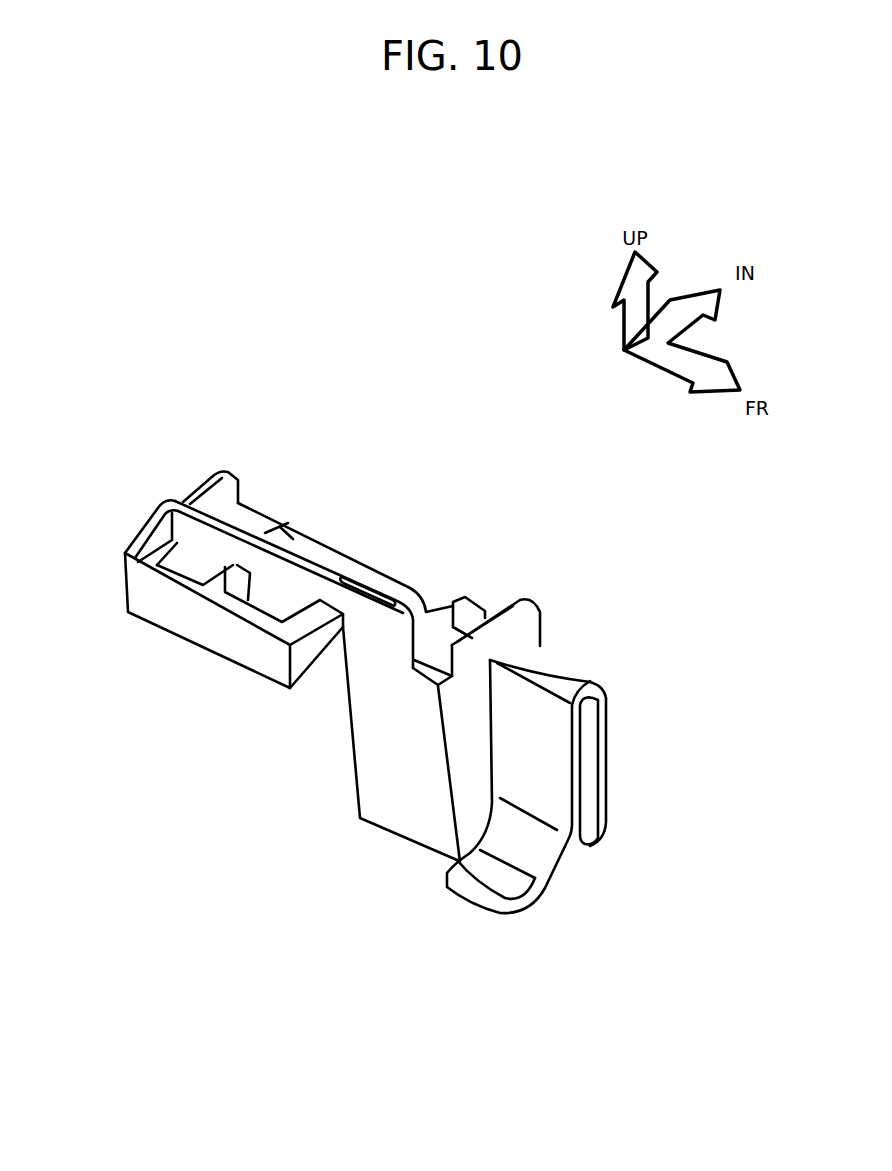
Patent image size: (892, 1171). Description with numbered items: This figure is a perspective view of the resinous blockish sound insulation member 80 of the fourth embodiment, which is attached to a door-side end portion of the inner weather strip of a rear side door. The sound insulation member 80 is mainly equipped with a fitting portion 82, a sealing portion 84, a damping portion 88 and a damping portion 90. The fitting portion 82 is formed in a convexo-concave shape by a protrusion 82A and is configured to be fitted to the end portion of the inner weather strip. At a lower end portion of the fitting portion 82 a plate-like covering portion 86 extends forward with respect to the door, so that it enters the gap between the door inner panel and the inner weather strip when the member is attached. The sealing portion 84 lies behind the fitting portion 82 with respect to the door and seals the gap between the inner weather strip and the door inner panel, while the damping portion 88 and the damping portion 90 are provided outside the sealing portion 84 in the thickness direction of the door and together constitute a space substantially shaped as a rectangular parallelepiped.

The sound insulation member 80 is at (453, 471).
The fitting portion 82 is at (551, 650).
The protrusion 82A is at (592, 680).
The sealing portion 84 is at (332, 548).
The covering portion 86 is at (477, 903).
The damping portion 88 is at (169, 572).
The damping portion 90 is at (262, 619).